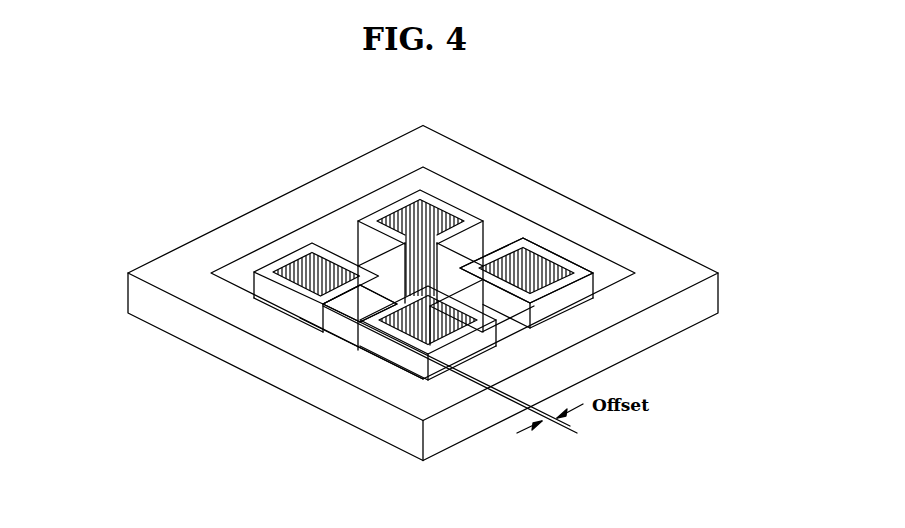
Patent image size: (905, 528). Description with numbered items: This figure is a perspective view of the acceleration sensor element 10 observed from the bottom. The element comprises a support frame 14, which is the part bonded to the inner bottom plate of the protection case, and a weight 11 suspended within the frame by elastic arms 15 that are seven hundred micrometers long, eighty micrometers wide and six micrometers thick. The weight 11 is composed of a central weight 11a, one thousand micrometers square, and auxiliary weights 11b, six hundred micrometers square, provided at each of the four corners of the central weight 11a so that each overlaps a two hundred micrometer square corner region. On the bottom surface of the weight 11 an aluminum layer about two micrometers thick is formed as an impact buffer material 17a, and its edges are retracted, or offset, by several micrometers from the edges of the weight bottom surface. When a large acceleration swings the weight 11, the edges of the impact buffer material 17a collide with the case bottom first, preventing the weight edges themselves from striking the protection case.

The acceleration sensor element 10 is at (211, 158).
The weight 11 is at (462, 242).
The central weight 11a is at (362, 292).
The auxiliary weight 11b is at (535, 275).
The support frame 14 is at (650, 268).
The elastic arms 15 is at (303, 325).
The impact buffer material 17a is at (427, 212).